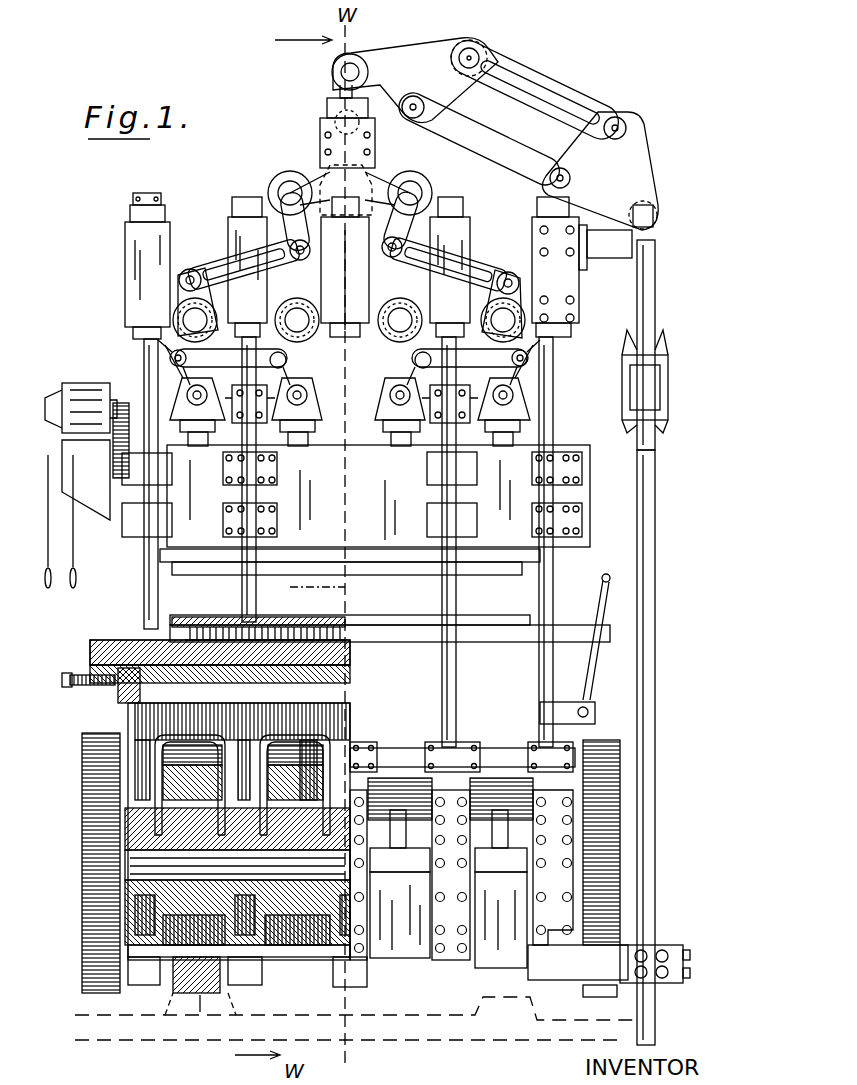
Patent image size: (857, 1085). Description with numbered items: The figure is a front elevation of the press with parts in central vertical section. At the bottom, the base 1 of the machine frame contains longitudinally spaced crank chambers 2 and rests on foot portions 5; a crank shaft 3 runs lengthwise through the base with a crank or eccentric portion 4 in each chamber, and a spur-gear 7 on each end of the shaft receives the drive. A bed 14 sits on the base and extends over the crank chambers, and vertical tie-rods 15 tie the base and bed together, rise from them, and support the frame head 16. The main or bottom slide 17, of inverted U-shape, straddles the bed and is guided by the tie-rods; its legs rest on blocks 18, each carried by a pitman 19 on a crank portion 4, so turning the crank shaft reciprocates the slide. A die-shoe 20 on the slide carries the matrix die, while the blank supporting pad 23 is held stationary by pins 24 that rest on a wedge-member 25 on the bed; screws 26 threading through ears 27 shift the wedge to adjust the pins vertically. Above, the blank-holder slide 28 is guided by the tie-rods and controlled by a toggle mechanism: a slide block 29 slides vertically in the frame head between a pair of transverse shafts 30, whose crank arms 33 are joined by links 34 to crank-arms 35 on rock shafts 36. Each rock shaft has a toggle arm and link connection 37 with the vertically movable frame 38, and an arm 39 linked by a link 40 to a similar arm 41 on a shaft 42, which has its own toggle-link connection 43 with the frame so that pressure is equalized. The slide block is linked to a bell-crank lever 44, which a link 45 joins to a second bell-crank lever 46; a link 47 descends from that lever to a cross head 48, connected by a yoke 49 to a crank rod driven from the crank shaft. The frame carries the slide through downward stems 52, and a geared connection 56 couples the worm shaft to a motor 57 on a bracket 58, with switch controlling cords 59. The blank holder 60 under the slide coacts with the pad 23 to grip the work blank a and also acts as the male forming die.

The base 1 is at (130, 902).
The crank chamber 2 is at (312, 950).
The crank shaft 3 is at (130, 862).
The crank or eccentric portion 4 is at (186, 1010).
The foot portion 5 is at (180, 978).
The spur-gear 7 is at (85, 800).
The bed 14 is at (340, 708).
The tie-rod 15 is at (145, 585).
The frame head 16 is at (184, 245).
The main or bottom slide 17 is at (462, 829).
The block 18 is at (165, 778).
The pitman 19 is at (150, 838).
The die-shoe 20 is at (95, 642).
The blank supporting pad 23 is at (315, 630).
The pin or support 24 is at (274, 626).
The wedge-member 25 is at (130, 708).
The screw 26 is at (70, 680).
The ear 27 is at (118, 690).
The blank-holder slide 28 is at (508, 470).
The slide block 29 is at (332, 122).
The transverse shaft 30 is at (288, 190).
The crank arm 33 is at (290, 243).
The link 34 is at (225, 268).
The crank-arm 35 is at (185, 285).
The rock shaft 36 is at (207, 323).
The toggle arm and link connection 37 is at (178, 381).
The vertically movable frame 38 is at (375, 410).
The arm 39 is at (170, 354).
The link 40 is at (351, 362).
The arm 41 is at (314, 380).
The shaft 42 is at (298, 316).
The toggle-link connection 43 is at (300, 404).
The bell-crank lever 44 is at (448, 114).
The link 45 is at (548, 108).
The bell-crank lever 46 is at (600, 171).
The link 47 is at (657, 306).
The cross head 48 is at (670, 390).
The yoke 49 is at (657, 594).
The stem 52 is at (202, 440).
The geared connection 56 is at (147, 495).
The motor 57 is at (82, 385).
The bracket 58 is at (86, 480).
The switch controlling cords 59 is at (73, 520).
The blank holder 60 is at (400, 568).
The work blank a is at (412, 620).